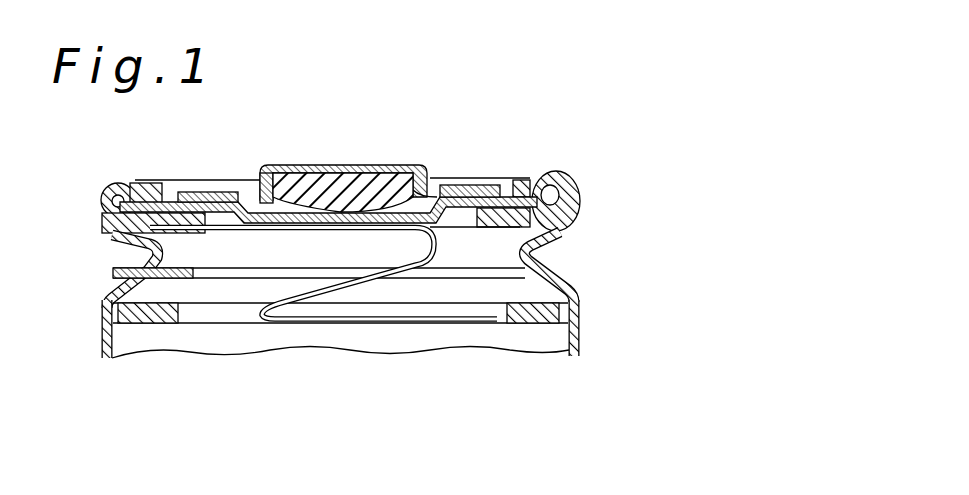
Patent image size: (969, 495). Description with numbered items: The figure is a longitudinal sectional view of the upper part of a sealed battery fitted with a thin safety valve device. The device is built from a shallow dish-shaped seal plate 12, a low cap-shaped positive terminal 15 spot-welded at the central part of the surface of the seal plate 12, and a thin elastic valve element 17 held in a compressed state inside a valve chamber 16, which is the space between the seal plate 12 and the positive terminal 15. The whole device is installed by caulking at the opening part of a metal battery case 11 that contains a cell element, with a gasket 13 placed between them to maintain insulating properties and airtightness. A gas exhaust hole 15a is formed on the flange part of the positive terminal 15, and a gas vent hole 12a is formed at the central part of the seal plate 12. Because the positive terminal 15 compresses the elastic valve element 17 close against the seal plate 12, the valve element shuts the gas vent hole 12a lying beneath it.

The metal battery case 11 is at (578, 317).
The seal plate 12 is at (250, 228).
The gas vent hole 12a is at (345, 208).
The gasket 13 is at (566, 240).
The positive terminal 15 is at (310, 165).
The gas exhaust hole 15a is at (247, 196).
The valve chamber 16 is at (274, 168).
The elastic valve element 17 is at (378, 183).